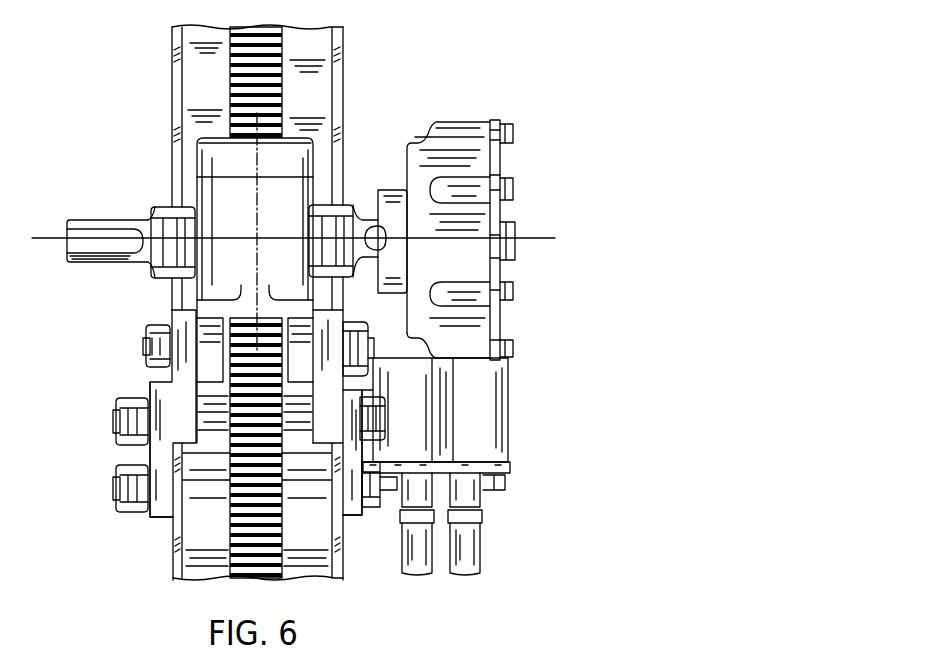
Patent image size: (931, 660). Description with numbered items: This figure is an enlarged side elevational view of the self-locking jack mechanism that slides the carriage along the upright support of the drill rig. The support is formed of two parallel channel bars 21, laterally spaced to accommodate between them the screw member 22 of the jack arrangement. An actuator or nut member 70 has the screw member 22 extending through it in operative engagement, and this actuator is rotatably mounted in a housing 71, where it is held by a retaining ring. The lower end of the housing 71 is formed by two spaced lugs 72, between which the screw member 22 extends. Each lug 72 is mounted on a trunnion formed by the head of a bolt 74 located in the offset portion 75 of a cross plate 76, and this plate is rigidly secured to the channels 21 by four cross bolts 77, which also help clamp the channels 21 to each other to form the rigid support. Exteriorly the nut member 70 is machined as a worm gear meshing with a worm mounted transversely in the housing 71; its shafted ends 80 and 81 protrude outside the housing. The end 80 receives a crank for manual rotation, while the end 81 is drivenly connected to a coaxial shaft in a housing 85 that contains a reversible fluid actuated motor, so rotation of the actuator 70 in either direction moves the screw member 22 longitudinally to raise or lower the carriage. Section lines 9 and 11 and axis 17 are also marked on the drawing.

The section line 9- 9 is at (622, 11).
The shaft axis / section line 11- 11 is at (297, 239).
The axis of rotation of gear 17 is at (257, 113).
The channel bars 21 is at (343, 83).
The screw member 22 is at (278, 92).
The nut member 70 is at (288, 142).
The housing 71 is at (290, 190).
The lugs 72 is at (215, 352).
The bolt 74 is at (143, 352).
The offset portion 75 is at (185, 380).
The cross plate 76 is at (165, 508).
The cross bolts 77 is at (113, 485).
The shafted end 80 is at (87, 223).
The shafted end 81 is at (370, 217).
The housing 85 is at (447, 133).